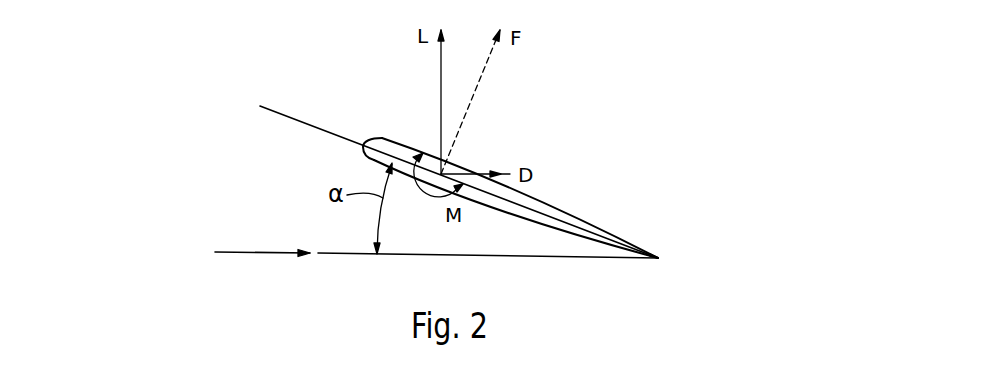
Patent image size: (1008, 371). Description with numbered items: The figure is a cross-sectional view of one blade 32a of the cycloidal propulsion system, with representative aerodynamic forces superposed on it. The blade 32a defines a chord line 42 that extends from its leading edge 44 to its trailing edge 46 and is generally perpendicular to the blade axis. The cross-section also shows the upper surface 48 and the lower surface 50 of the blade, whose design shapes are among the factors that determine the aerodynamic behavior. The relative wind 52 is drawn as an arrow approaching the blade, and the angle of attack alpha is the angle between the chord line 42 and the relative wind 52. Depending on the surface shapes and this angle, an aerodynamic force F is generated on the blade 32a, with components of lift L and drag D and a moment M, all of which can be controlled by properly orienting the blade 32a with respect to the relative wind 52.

The blade 32a is at (474, 173).
The chord line 42 is at (593, 230).
The leading edge 44 is at (367, 146).
The trailing edge 46 is at (660, 257).
The upper surface 48 is at (465, 160).
The lower surface 50 is at (494, 209).
The relative wind 52 is at (247, 252).